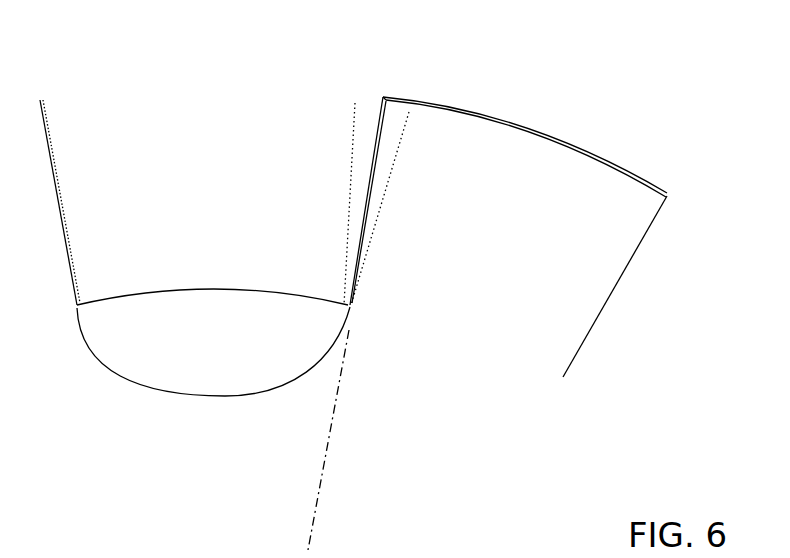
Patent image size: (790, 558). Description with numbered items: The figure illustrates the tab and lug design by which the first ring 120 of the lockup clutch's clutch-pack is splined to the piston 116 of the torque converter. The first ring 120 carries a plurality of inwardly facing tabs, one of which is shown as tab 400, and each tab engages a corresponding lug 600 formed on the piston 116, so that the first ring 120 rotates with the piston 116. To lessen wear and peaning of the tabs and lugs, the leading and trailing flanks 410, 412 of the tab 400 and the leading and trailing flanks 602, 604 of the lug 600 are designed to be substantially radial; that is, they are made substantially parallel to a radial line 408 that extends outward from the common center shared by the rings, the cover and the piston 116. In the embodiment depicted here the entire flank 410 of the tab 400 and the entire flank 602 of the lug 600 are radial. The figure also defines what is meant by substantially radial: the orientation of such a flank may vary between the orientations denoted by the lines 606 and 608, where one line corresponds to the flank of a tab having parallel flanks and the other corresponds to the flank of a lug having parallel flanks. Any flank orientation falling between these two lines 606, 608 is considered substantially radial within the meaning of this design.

The piston 116 is at (457, 431).
The first ring 120 is at (393, 41).
The tab 400 is at (230, 201).
The radial line 408 is at (318, 485).
The leading flank of tab 410 is at (371, 170).
The trailing flank of tab 412 is at (50, 130).
The lug 600 is at (528, 204).
The leading flank of lug 602 is at (367, 220).
The trailing flank of lug 604 is at (597, 315).
The flank orientation line 606 is at (350, 186).
The flank orientation line 608 is at (403, 140).